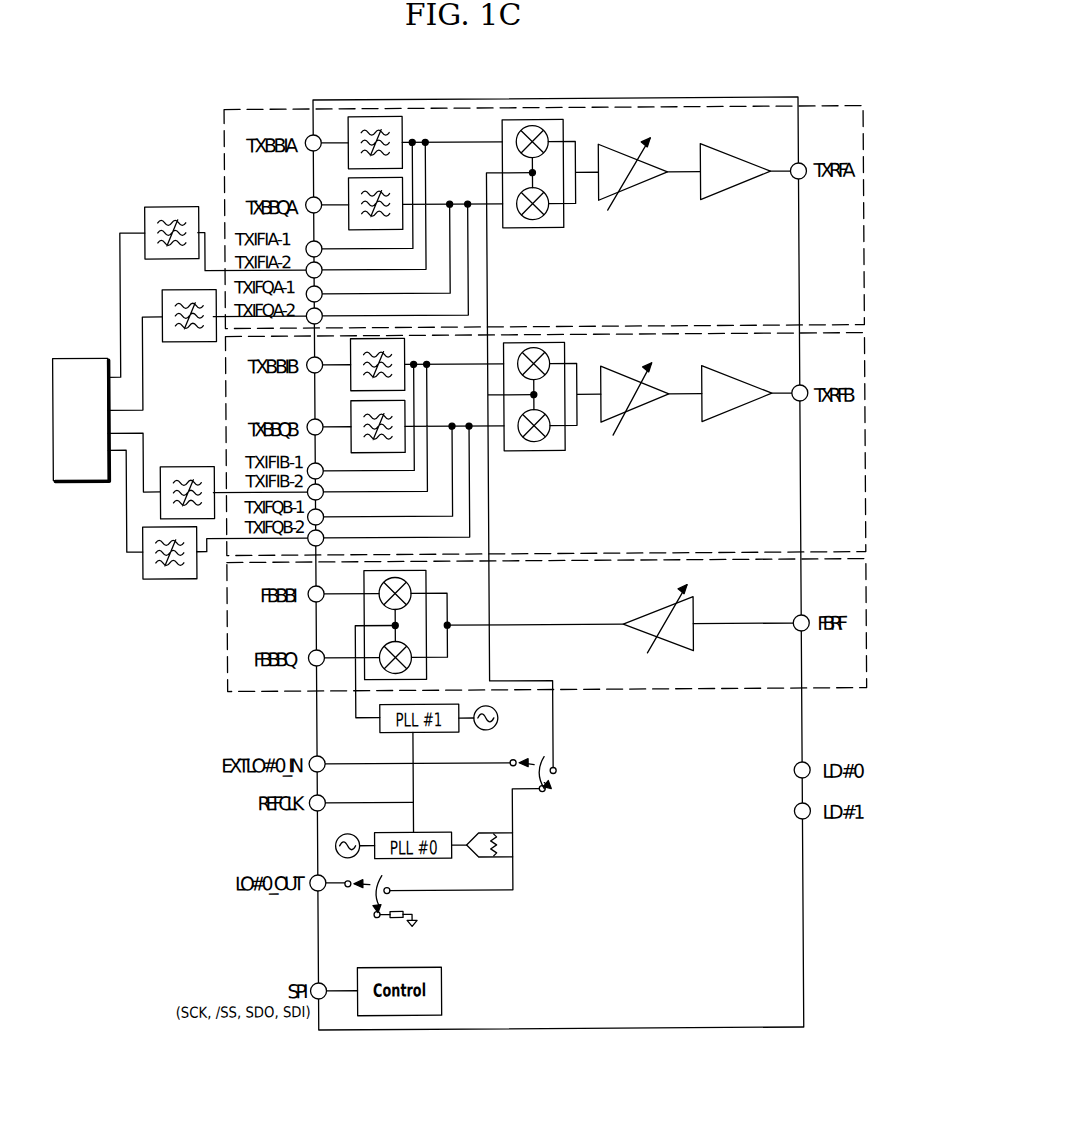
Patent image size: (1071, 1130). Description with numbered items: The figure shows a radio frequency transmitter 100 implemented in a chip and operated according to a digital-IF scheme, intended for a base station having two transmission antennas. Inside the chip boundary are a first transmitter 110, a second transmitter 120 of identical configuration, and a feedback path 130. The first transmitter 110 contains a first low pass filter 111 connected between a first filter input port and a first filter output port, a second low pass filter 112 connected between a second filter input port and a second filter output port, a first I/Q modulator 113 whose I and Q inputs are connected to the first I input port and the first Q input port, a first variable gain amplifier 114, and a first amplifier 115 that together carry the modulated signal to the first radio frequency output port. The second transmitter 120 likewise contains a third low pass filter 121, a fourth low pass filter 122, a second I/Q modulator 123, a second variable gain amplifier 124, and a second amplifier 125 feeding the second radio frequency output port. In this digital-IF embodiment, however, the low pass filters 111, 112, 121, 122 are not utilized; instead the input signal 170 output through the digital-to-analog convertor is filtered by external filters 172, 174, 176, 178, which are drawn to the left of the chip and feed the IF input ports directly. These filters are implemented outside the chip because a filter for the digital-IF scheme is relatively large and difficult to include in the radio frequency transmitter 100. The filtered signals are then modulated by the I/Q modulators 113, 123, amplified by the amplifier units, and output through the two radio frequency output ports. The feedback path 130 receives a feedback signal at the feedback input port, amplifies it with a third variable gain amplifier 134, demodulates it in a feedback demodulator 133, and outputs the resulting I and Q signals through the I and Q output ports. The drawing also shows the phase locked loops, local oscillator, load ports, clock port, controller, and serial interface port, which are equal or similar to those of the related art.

The radio frequency transmitter 100 is at (642, 97).
The first transmitter 110 is at (823, 108).
The first low pass filter 111 is at (402, 120).
The second low pass filter 112 is at (404, 171).
The first I/Q modulator 113 is at (547, 230).
The first variable gain amplifier 114 is at (638, 192).
The first amplifier 115 is at (733, 189).
The second transmitter 120 is at (226, 403).
The third low pass filter 121 is at (403, 342).
The fourth low pass filter 122 is at (404, 413).
The second I/Q modulator 123 is at (549, 452).
The second variable gain amplifier 124 is at (638, 414).
The second amplifier 125 is at (733, 411).
The feedback path 130 is at (830, 692).
The feedback demodulator 133 is at (423, 573).
The third variable gain amplifier 134 is at (656, 609).
The input signal 170 is at (89, 358).
The external filter 172 is at (172, 206).
The external filter 174 is at (187, 343).
The external filter 176 is at (187, 466).
The external filter 178 is at (170, 578).